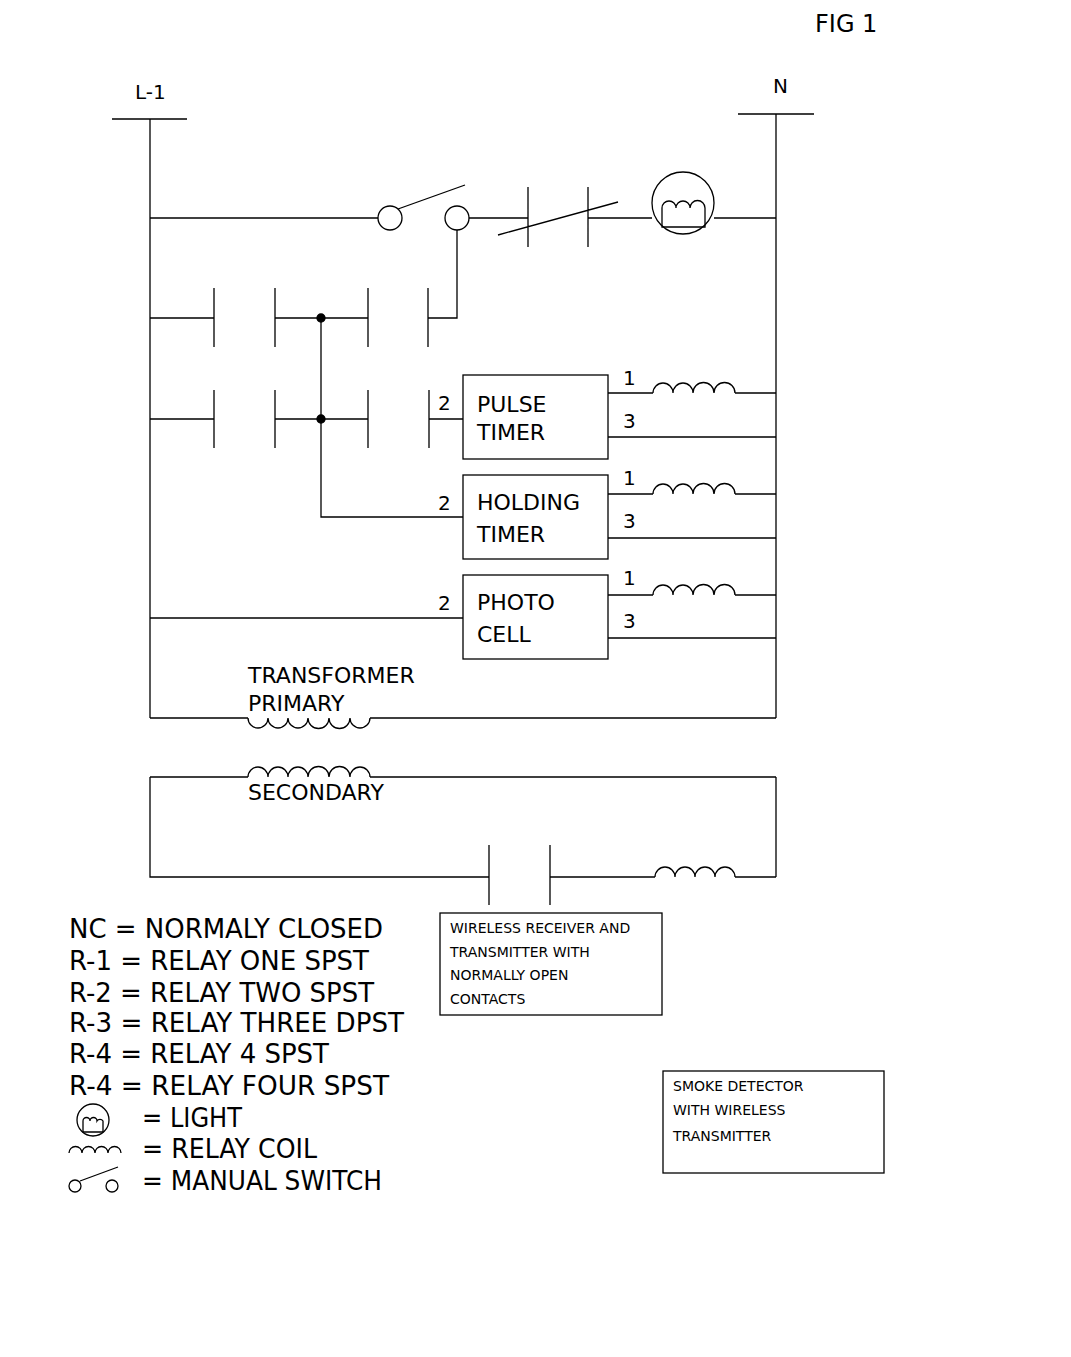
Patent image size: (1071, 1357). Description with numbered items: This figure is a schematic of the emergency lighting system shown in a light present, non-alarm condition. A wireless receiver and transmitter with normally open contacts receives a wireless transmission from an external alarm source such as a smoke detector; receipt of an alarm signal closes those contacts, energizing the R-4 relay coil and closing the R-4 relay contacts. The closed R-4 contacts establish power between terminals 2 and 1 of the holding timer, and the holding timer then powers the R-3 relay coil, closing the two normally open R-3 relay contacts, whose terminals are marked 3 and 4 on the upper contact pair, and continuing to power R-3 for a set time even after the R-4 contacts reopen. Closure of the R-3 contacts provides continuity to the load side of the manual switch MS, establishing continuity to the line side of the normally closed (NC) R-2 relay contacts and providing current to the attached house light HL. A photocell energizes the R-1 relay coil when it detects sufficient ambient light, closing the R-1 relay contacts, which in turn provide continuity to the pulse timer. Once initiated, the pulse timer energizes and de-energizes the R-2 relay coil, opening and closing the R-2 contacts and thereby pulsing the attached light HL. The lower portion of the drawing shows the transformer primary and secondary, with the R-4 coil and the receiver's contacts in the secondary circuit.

The holding timer terminal 1 is at (198, 403).
The holding timer terminal 2 is at (289, 403).
The relay terminal 3 is at (353, 303).
The relay terminal 4 is at (443, 303).
The R-1 relay R-1 is at (572, 492).
The R-2 relay R-2 is at (622, 272).
The R-3 relay R-3 is at (463, 362).
The R-4 relay R-4 is at (463, 565).
The normally closed NC is at (559, 269).
The manual switch MS is at (422, 177).
The house light HL is at (711, 174).